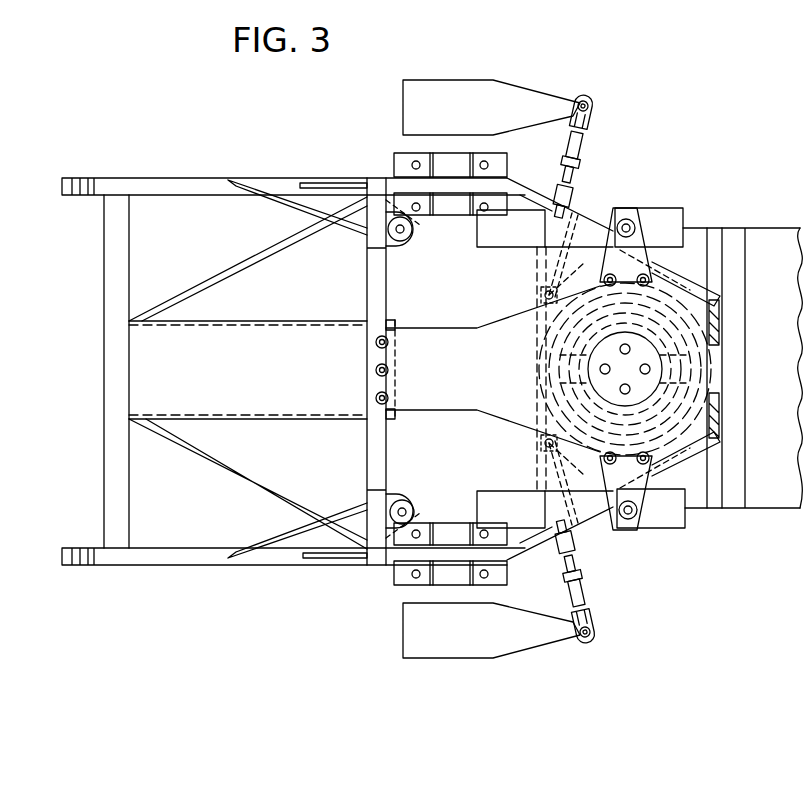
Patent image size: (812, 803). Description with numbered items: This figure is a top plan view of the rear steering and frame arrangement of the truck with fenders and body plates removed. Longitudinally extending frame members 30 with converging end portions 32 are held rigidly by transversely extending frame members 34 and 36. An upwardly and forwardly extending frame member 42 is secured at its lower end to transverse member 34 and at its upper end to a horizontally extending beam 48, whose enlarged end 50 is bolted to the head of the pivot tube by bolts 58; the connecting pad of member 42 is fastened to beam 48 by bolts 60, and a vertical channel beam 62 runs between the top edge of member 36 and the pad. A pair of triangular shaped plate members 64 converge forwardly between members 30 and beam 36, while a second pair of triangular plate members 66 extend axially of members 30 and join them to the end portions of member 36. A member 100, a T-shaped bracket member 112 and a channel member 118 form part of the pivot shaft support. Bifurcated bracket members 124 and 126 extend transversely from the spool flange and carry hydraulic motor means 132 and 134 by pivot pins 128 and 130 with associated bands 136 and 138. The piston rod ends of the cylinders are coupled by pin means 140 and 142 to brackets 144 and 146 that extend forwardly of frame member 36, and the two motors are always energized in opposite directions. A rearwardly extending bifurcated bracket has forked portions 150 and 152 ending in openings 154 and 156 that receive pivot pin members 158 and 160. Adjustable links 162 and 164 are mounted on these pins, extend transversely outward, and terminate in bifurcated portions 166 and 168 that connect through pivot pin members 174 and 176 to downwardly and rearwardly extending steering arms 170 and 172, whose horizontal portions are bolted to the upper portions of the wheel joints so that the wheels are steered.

The longitudinally extending frame members 30 is at (138, 182).
The converging end portions 32 is at (525, 193).
The transversely extending frame member 34 is at (107, 305).
The transversely extending frame member 36 is at (372, 450).
The upwardly and forwardly extending frame member 42 is at (297, 408).
The horizontally extending beam 48 is at (437, 402).
The enlarged end 50 is at (702, 393).
The bolts 58 is at (640, 369).
The bolts 60 is at (390, 367).
The vertical channel beam 62 is at (398, 320).
The triangular shaped plate members 64 is at (283, 200).
The triangular shaped plate members 66 is at (345, 183).
The member 100 is at (538, 467).
The T-shaped bracket member 112 is at (715, 480).
The channel member 118 is at (735, 437).
The bifurcated bracket member 124 is at (660, 483).
The bifurcated bracket member 126 is at (637, 262).
The pivot pin 128 is at (640, 512).
The pivot pin 130 is at (635, 223).
The hydraulic motor means 132 is at (673, 515).
The hydraulic motor means 134 is at (672, 223).
The band 136 is at (628, 523).
The band 138 is at (630, 210).
The pin means 140 is at (410, 505).
The pin means 142 is at (408, 237).
The bracket 144 is at (392, 495).
The bracket 146 is at (390, 243).
The forked portion 150 is at (568, 275).
The forked portion 152 is at (567, 452).
The opening 154 is at (540, 295).
The opening 156 is at (542, 438).
The pivot pin member 158 is at (525, 412).
The pivot pin member 160 is at (533, 283).
The adjustable link 162 is at (593, 607).
The adjustable link 164 is at (592, 179).
The bifurcated portion 166 is at (615, 625).
The bifurcated portion 168 is at (611, 114).
The steering arm 170 is at (535, 647).
The steering arm 172 is at (530, 95).
The pivot pin member 174 is at (613, 647).
The pivot pin member 176 is at (607, 89).